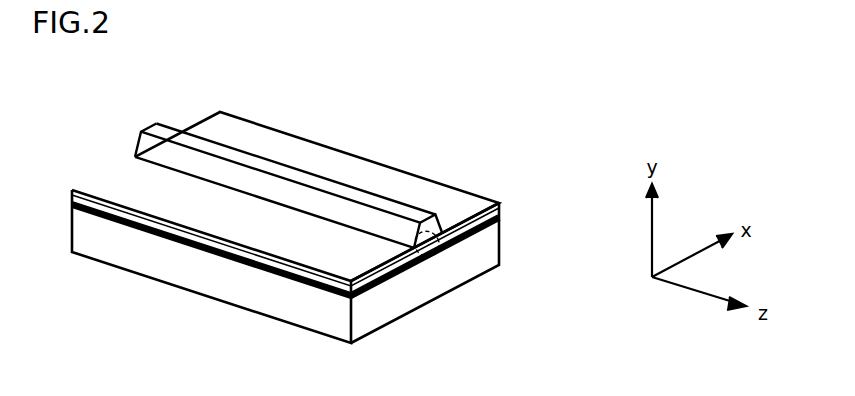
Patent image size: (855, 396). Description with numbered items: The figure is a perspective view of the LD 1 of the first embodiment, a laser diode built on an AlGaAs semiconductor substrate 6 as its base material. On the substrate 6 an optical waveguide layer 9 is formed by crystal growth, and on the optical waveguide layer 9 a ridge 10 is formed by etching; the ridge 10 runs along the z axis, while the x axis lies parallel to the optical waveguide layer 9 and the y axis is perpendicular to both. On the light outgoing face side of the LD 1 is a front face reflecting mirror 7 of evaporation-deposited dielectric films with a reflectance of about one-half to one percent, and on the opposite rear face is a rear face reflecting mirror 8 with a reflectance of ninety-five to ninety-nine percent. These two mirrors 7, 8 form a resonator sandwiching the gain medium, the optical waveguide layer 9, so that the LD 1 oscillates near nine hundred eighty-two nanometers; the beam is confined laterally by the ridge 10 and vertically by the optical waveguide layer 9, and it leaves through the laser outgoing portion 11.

The LD 1 is at (358, 152).
The AlGaAs semiconductor substrate 6 is at (123, 251).
The front face reflecting mirror 7 is at (395, 303).
The rear face reflecting mirror 8 is at (73, 190).
The optical waveguide layer 9 is at (500, 209).
The ridge 10 is at (164, 133).
The laser outgoing portion 11 is at (433, 255).